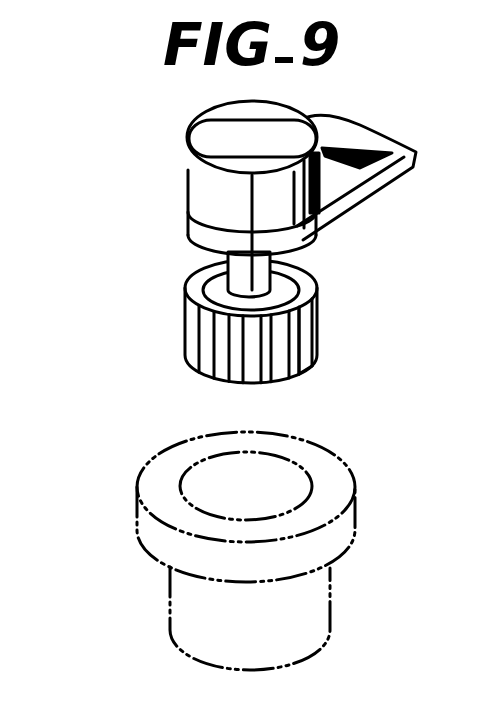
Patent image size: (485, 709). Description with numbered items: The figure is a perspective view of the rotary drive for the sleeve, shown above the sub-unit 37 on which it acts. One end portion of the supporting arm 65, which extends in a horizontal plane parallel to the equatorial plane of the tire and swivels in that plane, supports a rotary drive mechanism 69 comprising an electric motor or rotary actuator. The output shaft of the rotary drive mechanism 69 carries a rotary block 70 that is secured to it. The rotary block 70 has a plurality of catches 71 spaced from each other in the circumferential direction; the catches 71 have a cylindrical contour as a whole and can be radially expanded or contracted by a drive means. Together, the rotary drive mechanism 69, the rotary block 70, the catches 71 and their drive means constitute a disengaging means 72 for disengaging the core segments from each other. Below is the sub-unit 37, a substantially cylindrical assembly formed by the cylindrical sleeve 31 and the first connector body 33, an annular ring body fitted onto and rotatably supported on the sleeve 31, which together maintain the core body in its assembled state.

The disengaging means 72 is at (175, 126).
The rotary drive mechanism 69 is at (200, 188).
The supporting arm 65 is at (393, 144).
The rotary block 70 is at (190, 283).
The catches 71 is at (268, 372).
The sub-unit 37 is at (352, 453).
The first connector body 33 is at (136, 522).
The cylindrical sleeve 31 is at (318, 606).